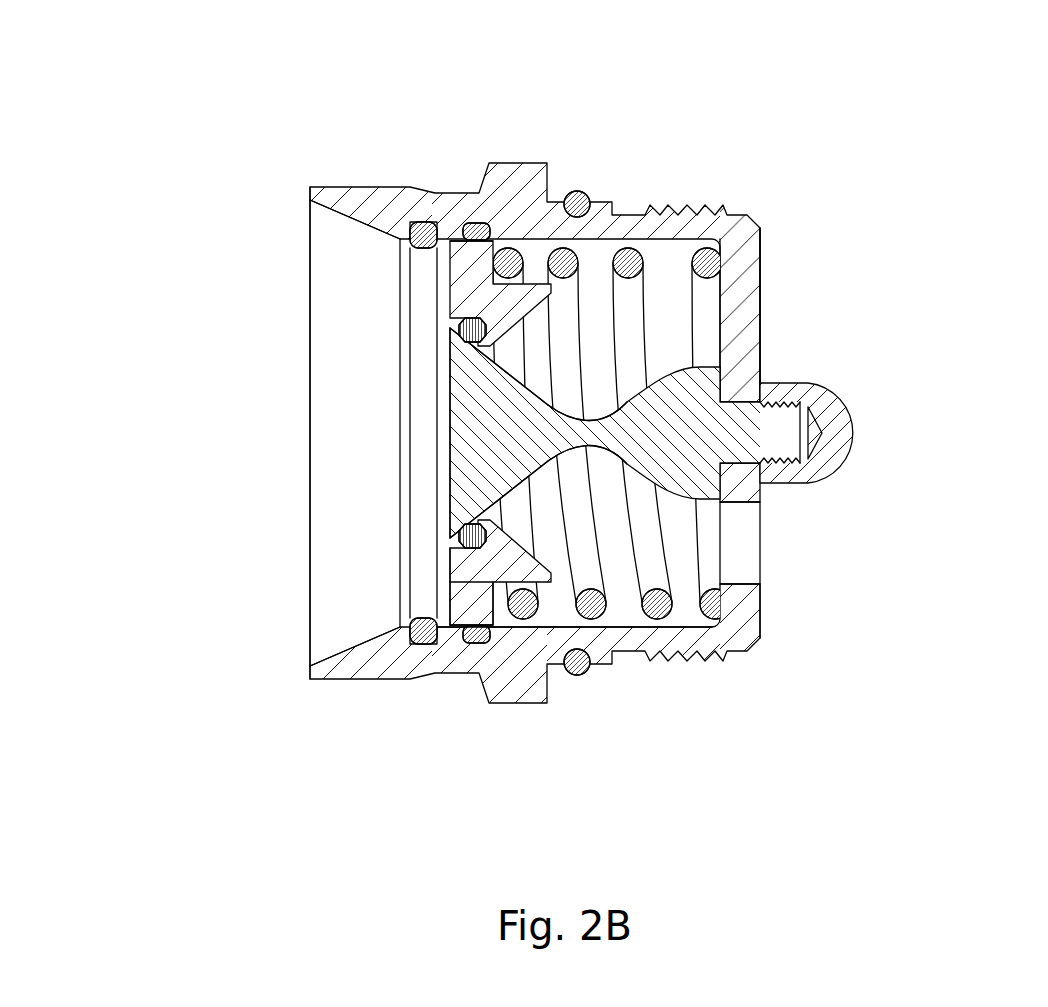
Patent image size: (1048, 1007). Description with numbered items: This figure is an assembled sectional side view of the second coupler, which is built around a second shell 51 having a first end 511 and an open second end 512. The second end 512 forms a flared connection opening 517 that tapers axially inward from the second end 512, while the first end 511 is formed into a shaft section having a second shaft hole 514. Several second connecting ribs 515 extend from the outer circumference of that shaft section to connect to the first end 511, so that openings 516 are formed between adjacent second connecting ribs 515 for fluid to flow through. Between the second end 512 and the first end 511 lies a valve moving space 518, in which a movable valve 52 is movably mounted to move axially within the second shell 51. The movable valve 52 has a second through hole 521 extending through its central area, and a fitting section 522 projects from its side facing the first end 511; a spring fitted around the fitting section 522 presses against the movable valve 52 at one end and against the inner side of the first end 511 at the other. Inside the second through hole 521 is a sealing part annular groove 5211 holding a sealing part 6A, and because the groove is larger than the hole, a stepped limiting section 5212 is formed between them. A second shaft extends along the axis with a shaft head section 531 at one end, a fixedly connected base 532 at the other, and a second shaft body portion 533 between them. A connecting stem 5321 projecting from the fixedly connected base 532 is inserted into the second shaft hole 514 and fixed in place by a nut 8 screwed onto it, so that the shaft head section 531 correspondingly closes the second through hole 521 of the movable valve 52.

The second shell 51 is at (622, 232).
The first end 511 is at (786, 298).
The second end 512 is at (286, 210).
The second shaft hole 514 is at (763, 373).
The second connecting ribs 515 is at (742, 298).
The openings 516 is at (740, 565).
The flared connection opening 517 is at (314, 249).
The valve moving space 518 is at (683, 585).
The movable valve 52 is at (493, 515).
The second through hole 521 is at (483, 607).
The sealing part annular groove 5211 is at (450, 565).
The stepped limiting section 5212 is at (454, 240).
The fitting section 522 is at (542, 590).
The shaft head section 531 is at (472, 432).
The fixedly connected base 532 is at (690, 448).
The second shaft body portion 533 is at (613, 427).
The connecting stem 5321 is at (800, 485).
The sealing part 6A is at (456, 537).
The nut 8 is at (853, 436).